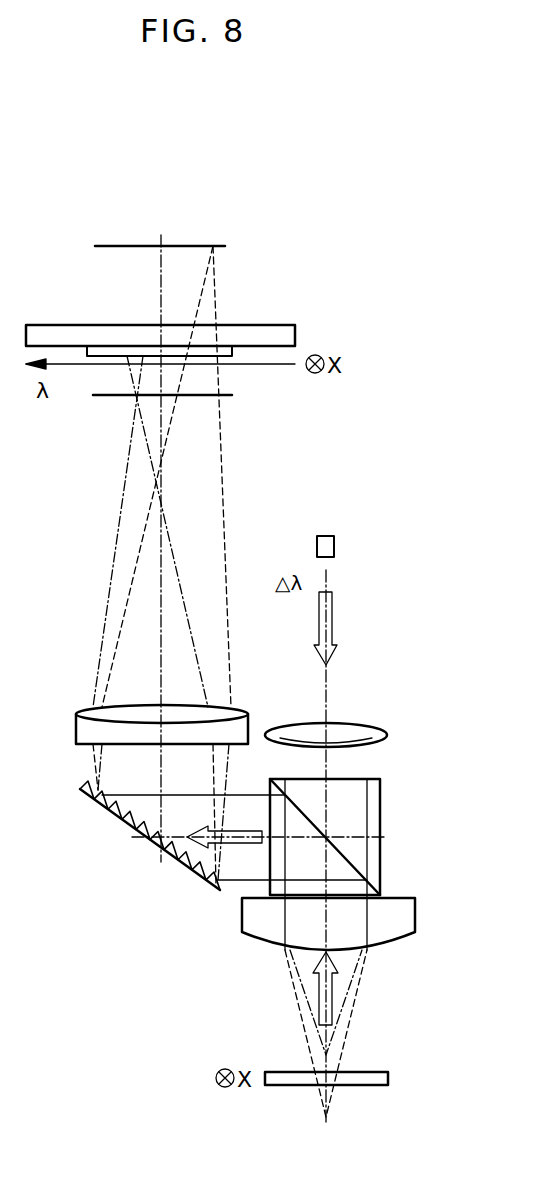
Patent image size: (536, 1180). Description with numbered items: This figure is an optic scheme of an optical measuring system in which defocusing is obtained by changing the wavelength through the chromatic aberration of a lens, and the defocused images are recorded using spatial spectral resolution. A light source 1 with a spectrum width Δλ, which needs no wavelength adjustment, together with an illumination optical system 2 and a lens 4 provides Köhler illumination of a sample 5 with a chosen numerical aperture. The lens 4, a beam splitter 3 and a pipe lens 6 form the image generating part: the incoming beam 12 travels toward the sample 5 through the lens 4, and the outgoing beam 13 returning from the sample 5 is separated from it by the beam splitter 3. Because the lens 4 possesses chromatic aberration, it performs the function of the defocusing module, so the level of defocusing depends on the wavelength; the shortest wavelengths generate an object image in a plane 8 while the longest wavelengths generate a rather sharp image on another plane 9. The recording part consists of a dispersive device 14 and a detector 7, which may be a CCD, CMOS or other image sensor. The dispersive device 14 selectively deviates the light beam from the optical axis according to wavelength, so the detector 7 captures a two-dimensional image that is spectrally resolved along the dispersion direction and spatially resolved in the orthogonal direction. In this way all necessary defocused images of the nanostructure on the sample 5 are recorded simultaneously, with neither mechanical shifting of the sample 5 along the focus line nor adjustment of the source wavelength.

The light source 1 is at (335, 546).
The illumination optical system 2 is at (388, 735).
The beam splitter 3 is at (381, 810).
The lens 4 is at (390, 942).
The sample 5 is at (390, 1078).
The pipe lens 6 is at (76, 729).
The detector 7 is at (45, 325).
The plane 8 is at (108, 244).
The another plane 9 is at (232, 394).
The incoming beam 12 is at (317, 998).
The outgoing beam 13 is at (233, 845).
The dispersive device 14 is at (115, 818).